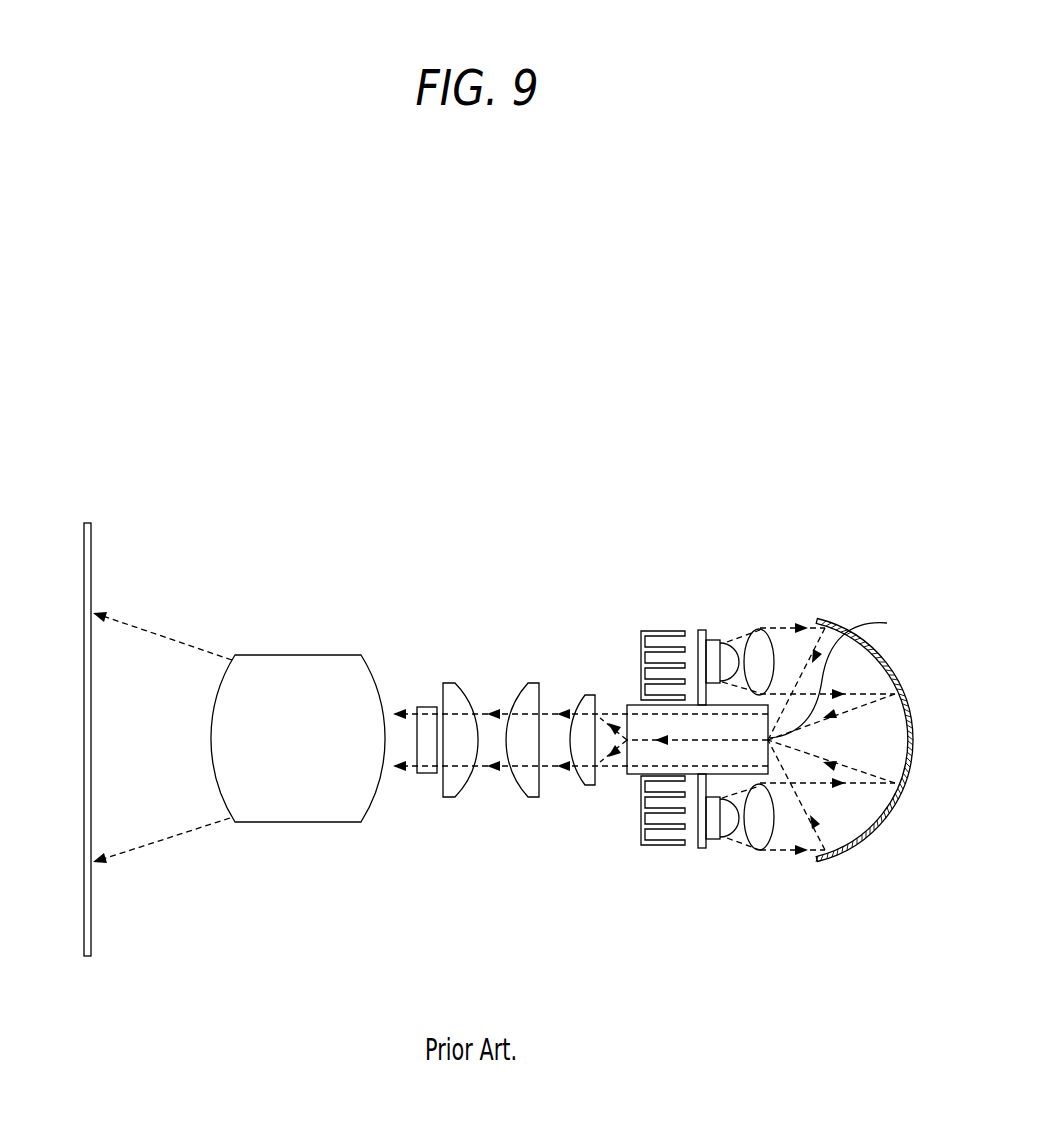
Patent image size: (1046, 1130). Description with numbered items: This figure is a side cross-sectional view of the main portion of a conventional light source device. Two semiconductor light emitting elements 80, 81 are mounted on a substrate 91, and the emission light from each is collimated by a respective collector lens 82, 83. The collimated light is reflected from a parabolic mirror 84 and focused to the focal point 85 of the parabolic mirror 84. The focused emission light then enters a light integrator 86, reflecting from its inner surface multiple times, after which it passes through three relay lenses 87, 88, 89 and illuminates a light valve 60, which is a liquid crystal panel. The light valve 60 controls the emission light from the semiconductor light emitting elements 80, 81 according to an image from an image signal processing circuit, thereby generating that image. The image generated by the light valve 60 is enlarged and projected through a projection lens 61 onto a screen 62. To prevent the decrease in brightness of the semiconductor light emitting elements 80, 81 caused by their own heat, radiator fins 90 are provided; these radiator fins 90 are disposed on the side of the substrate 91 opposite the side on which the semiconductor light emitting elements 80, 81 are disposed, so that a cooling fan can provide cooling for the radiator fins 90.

The light valve 60 is at (430, 773).
The projection lens 61 is at (294, 654).
The screen 62 is at (92, 556).
The semiconductor light emitting element 80 is at (730, 658).
The semiconductor light emitting element 81 is at (728, 822).
The collector lens 82 is at (760, 628).
The collector lens 83 is at (762, 850).
The parabolic mirror 84 is at (881, 820).
The focal point 85 is at (843, 674).
The light integrator 86 is at (632, 782).
The relay lens 87 is at (592, 695).
The relay lens 88 is at (535, 683).
The relay lens 89 is at (447, 683).
The radiator fins 90 is at (673, 848).
The substrate 91 is at (697, 645).